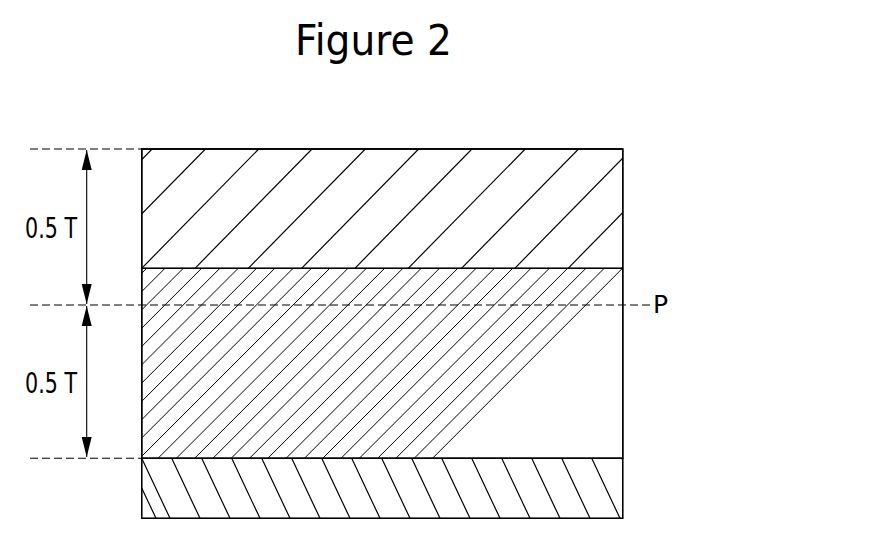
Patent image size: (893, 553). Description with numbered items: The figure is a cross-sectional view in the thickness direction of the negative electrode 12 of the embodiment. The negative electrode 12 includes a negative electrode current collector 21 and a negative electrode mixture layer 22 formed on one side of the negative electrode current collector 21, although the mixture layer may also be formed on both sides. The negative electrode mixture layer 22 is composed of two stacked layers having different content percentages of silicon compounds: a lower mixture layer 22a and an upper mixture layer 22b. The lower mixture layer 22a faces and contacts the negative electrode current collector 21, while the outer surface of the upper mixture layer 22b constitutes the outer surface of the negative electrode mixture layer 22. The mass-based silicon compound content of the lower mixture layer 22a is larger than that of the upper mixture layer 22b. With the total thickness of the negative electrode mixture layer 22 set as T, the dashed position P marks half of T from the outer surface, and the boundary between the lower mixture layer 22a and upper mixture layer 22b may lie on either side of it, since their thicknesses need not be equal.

The negative electrode 12 is at (426, 276).
The negative electrode mixture layer 22 is at (426, 276).
The upper mixture layer 22b is at (590, 213).
The lower mixture layer 22a is at (777, 215).
The negative electrode current collector 21 is at (597, 488).